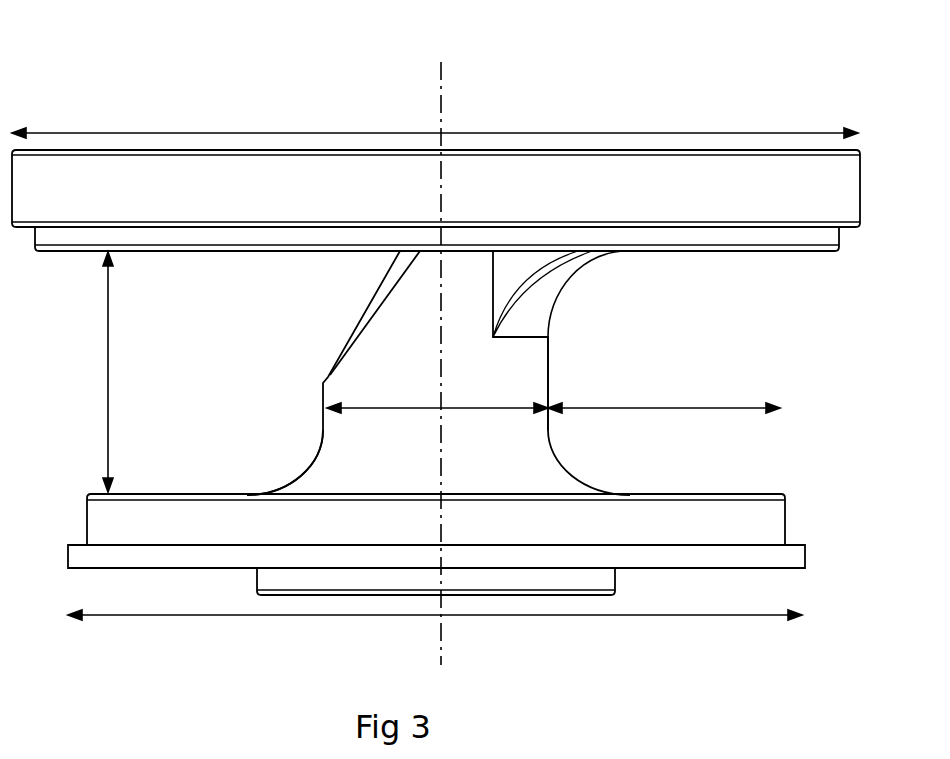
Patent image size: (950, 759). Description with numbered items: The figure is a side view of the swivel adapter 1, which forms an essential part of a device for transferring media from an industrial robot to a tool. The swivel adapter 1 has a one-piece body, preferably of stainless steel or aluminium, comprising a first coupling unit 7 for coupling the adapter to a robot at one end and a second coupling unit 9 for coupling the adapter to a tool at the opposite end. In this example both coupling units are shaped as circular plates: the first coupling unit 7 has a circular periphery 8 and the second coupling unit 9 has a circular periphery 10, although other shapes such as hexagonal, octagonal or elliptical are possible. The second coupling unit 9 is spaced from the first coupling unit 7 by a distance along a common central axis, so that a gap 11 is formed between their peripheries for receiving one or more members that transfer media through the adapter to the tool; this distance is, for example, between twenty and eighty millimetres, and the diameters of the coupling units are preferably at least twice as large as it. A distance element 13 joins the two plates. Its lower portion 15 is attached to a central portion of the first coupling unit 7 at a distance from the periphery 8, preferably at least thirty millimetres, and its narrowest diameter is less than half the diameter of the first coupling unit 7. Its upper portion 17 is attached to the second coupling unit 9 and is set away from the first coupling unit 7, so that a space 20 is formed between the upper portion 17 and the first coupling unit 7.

The swivel adapter 1 is at (76, 104).
The first coupling unit 7 is at (812, 557).
The periphery 8 is at (785, 520).
The second coupling unit 9 is at (866, 174).
The periphery 10 is at (860, 196).
The gap 11 is at (501, 373).
The distance element 13 is at (555, 358).
The lower portion 15 is at (313, 453).
The upper portion 17 is at (558, 283).
The space 20 is at (597, 337).